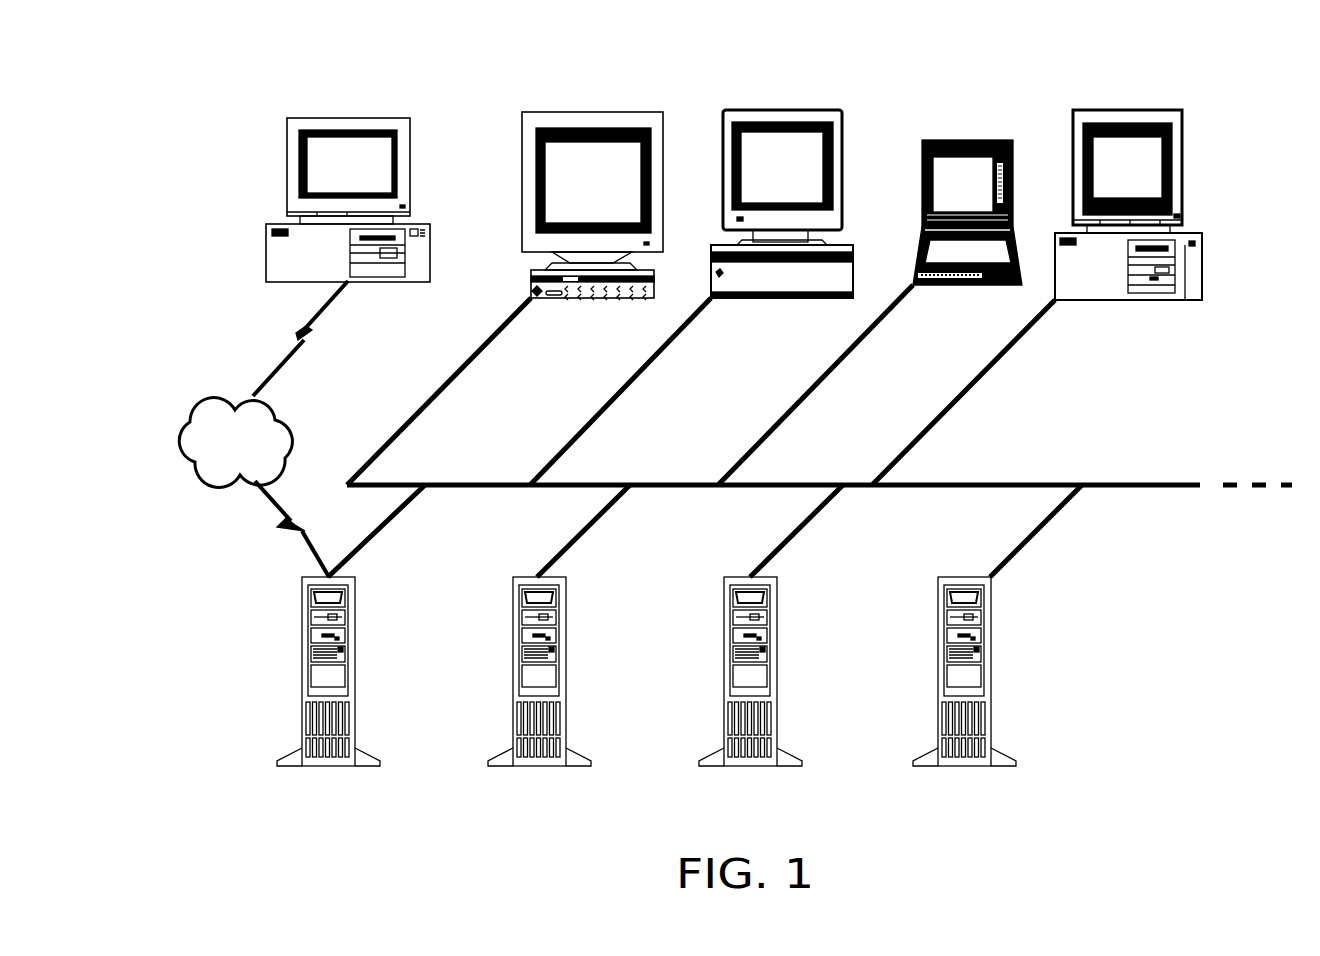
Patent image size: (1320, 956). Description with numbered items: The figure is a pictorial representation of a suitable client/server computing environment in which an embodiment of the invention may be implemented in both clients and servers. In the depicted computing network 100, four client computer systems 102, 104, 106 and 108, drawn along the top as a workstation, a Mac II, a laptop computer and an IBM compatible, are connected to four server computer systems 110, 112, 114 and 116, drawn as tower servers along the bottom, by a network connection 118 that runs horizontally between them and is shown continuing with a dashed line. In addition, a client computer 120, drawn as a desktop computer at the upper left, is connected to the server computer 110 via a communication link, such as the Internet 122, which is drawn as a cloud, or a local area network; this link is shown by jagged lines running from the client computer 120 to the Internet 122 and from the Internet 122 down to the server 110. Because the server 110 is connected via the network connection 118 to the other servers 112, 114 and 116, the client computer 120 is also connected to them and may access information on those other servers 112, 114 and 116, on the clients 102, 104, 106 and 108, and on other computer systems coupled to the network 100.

The computing network 100 is at (1127, 633).
The client computer system 102 is at (593, 112).
The client computer system 104 is at (783, 110).
The client computer system 106 is at (985, 140).
The client computer system 108 is at (1122, 110).
The server computer system 110 is at (355, 673).
The server computer system 112 is at (567, 673).
The server computer system 114 is at (778, 673).
The server computer system 116 is at (992, 673).
The network connection 118 is at (893, 490).
The client computer 120 is at (346, 118).
The Internet 122 is at (297, 435).